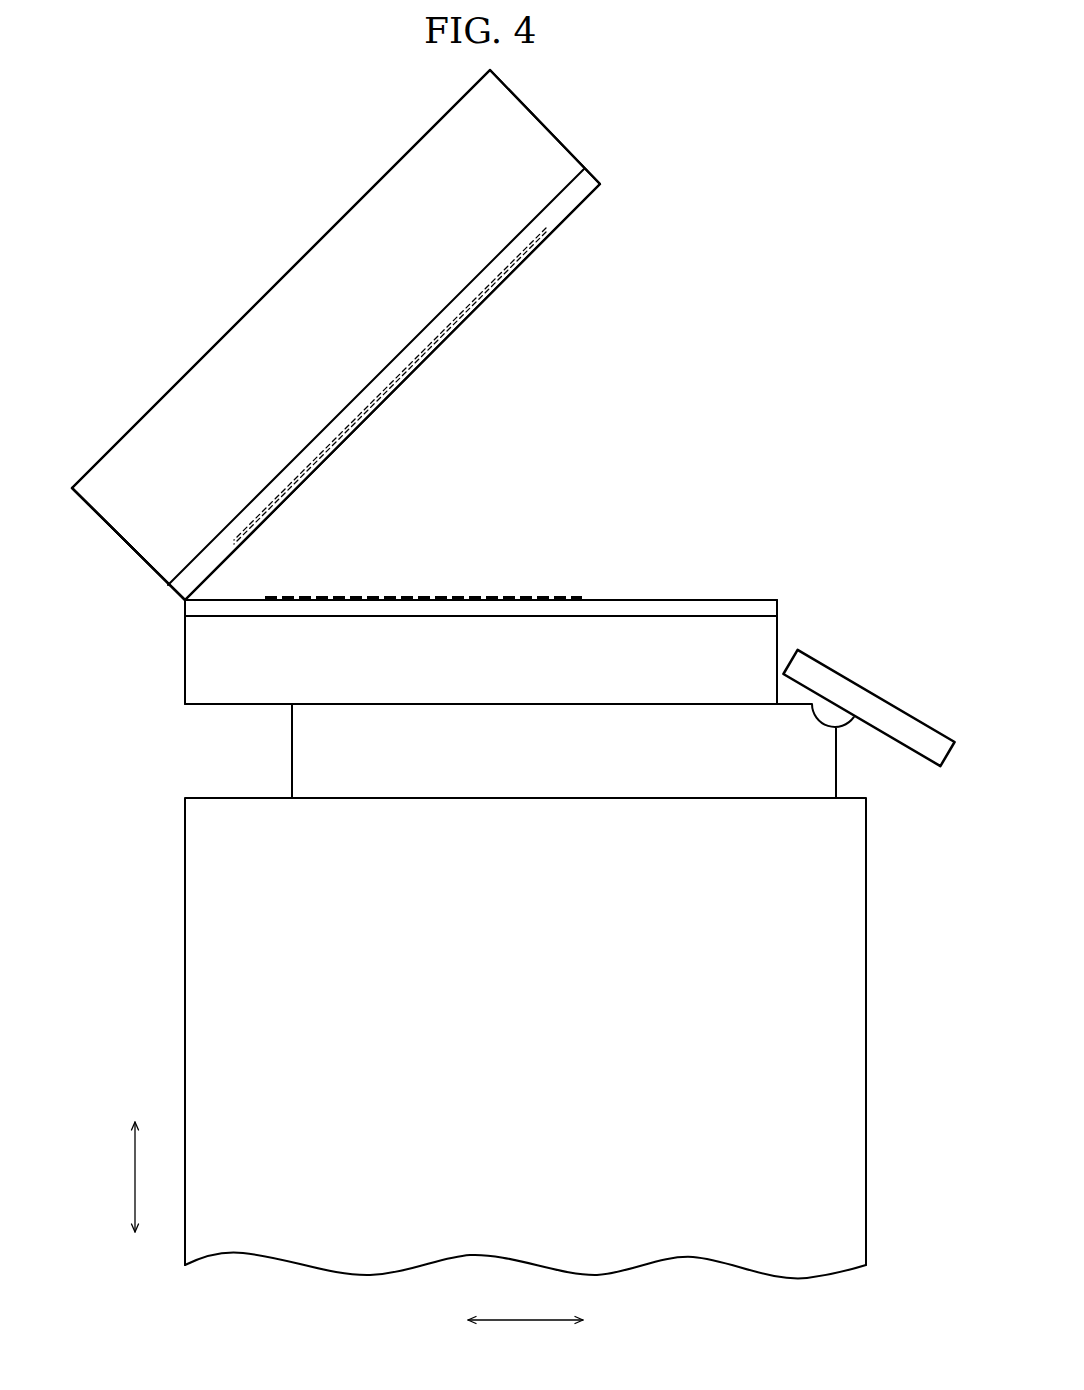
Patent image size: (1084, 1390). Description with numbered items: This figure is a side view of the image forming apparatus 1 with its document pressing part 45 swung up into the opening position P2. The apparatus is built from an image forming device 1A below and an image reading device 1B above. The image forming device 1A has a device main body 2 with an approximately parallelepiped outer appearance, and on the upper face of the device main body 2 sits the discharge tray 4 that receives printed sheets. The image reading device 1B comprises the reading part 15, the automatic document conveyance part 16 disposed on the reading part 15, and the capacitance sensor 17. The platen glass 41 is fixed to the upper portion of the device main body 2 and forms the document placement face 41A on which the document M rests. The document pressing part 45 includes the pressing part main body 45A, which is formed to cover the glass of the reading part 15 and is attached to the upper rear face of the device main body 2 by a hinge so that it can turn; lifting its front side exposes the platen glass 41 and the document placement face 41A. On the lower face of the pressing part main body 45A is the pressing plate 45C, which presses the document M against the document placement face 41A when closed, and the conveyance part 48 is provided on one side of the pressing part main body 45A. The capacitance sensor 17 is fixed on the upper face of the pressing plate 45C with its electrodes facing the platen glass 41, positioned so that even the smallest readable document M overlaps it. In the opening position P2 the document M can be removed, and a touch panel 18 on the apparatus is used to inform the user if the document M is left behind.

The image forming apparatus 1 is at (70, 655).
The image forming device 1A is at (175, 833).
The image reading device 1B is at (112, 636).
The device main body 2 is at (184, 980).
The discharge tray 4 is at (525, 797).
The reading part 15 is at (175, 690).
The automatic document conveyance part 16 is at (140, 605).
The capacitance sensor 17 is at (268, 500).
The touch panel 18 is at (895, 712).
The platen glass 41 is at (684, 607).
The document placement face 41A is at (630, 596).
The document pressing part 45 is at (173, 600).
The pressing part main body 45A is at (348, 407).
The pressing plate 45C is at (357, 430).
The conveyance part 48 is at (131, 557).
The document M is at (536, 596).
The opening position P2 is at (282, 240).